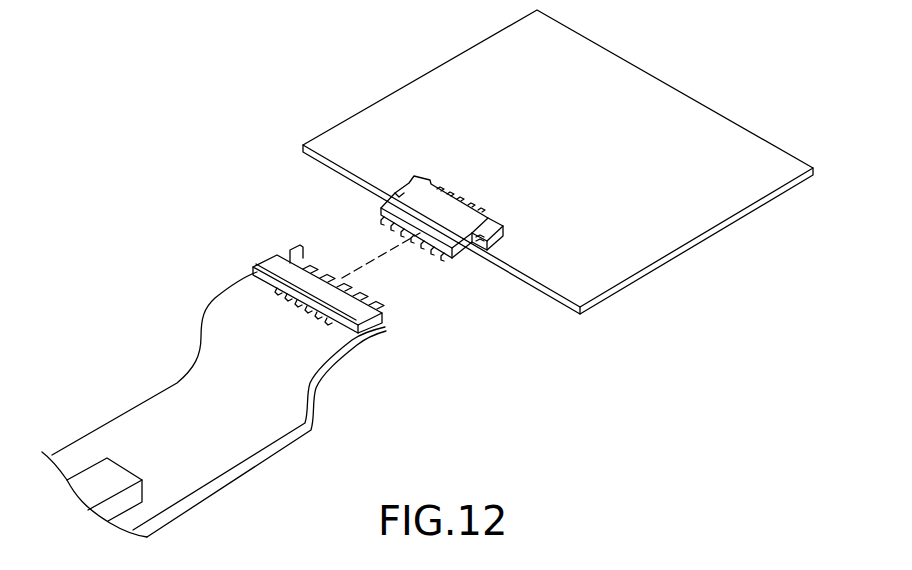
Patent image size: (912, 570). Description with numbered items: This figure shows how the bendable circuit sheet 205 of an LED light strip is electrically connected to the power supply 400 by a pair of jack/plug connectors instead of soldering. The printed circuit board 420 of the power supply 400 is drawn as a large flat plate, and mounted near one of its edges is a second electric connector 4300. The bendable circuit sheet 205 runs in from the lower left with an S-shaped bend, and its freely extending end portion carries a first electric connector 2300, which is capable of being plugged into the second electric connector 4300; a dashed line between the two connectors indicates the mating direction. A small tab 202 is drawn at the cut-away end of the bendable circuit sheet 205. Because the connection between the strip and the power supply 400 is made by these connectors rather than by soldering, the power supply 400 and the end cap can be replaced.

The printed circuit board 420 is at (558, 162).
The power supply 400 is at (658, 88).
The second electric connector 4300 is at (408, 182).
The first electric connector 2300 is at (270, 262).
The bendable circuit sheet 205 is at (167, 407).
The cable end tab 202 is at (93, 478).